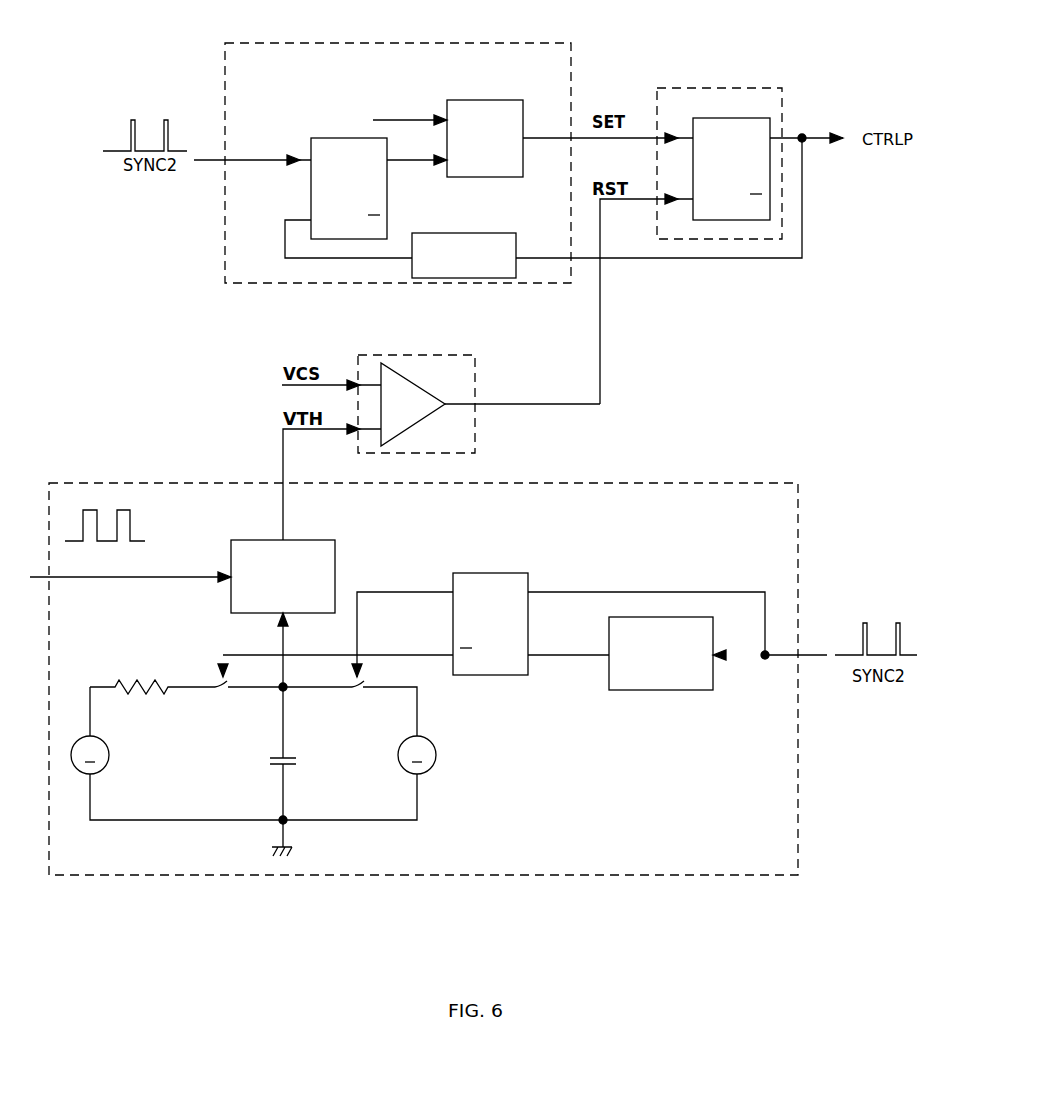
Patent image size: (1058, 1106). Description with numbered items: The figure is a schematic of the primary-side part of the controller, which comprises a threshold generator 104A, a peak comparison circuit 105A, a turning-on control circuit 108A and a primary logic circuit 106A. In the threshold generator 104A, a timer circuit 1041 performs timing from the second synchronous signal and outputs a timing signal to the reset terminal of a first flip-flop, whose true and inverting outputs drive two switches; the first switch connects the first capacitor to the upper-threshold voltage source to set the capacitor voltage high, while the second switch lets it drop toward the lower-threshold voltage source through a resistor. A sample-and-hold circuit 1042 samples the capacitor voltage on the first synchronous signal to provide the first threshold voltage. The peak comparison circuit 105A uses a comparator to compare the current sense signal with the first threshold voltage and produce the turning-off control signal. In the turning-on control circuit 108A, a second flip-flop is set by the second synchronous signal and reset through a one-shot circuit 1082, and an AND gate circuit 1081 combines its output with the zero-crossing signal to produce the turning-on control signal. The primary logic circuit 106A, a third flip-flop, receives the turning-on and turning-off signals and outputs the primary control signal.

The turning-on control circuit 108A is at (398, 142).
The AND gate circuit 1081 is at (525, 120).
The one-shot circuit 1082 is at (467, 233).
The primary logic circuit 106A is at (697, 88).
The peak comparison circuit 105A is at (474, 384).
The threshold generator 104A is at (428, 679).
The sample-and-hold circuit 1042 is at (233, 614).
The timer circuit 1041 is at (633, 691).